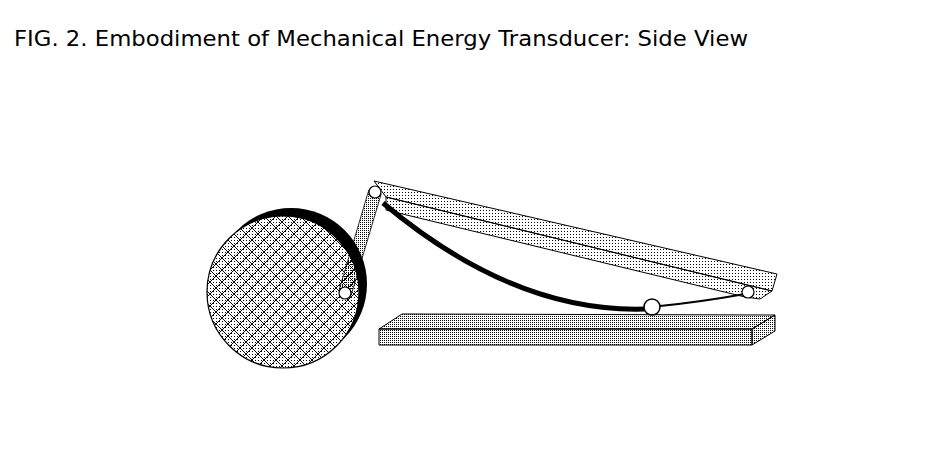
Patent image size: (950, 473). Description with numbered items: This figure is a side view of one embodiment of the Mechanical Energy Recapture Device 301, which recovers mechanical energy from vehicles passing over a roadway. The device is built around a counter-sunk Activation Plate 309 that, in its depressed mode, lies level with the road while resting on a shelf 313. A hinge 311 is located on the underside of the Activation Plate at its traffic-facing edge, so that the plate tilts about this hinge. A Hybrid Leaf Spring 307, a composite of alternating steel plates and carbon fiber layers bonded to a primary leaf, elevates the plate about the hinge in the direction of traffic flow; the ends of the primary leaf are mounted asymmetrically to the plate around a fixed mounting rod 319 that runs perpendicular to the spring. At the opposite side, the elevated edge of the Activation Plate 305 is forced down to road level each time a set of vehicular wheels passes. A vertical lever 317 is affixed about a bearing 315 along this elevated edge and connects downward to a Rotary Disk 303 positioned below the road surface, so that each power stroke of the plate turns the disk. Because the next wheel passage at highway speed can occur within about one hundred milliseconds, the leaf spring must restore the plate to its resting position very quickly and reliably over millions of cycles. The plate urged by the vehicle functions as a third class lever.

The Mechanical Energy Recapture Device 301 is at (200, 217).
The Rotary Disk 303 is at (225, 247).
The elevated edge of the Activation Plate 305 is at (370, 185).
The Hybrid Leaf Spring 307 is at (495, 277).
The Activation Plate 309 is at (560, 233).
The hinge 311 is at (757, 288).
The shelf 313 is at (565, 343).
The bearing 315 is at (353, 292).
The vertical lever 317 is at (367, 250).
The fixed mounting rod 319 is at (655, 302).